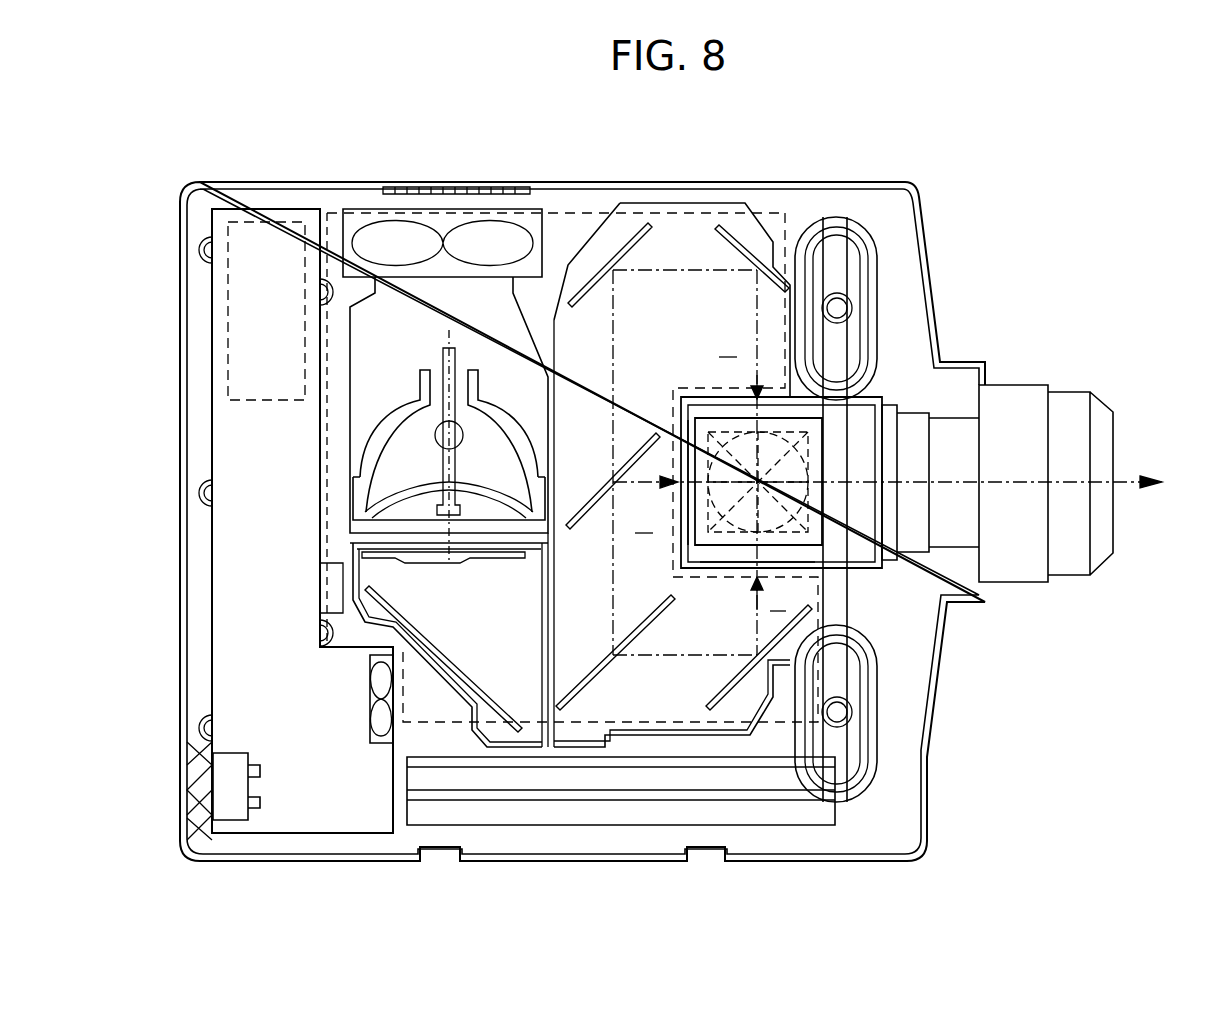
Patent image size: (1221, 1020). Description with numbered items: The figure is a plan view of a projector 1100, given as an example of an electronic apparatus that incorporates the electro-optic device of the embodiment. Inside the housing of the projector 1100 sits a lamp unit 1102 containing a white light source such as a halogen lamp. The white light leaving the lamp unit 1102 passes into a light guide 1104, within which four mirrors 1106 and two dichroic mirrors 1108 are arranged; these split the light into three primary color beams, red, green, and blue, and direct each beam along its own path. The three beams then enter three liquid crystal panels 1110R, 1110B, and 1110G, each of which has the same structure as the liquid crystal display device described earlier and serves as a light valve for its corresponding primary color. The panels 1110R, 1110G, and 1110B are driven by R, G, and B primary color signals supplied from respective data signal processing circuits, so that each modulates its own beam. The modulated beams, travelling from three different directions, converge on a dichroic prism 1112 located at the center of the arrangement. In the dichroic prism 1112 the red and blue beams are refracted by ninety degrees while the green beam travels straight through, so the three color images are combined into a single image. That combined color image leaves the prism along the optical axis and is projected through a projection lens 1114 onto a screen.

The projector 1100 is at (935, 189).
The lamp unit 1102 is at (495, 330).
The light guide 1104 is at (620, 207).
The mirror 1106 is at (730, 245).
The dichroic mirror 1108 is at (606, 498).
The liquid crystal panel 1110R is at (724, 397).
The liquid crystal panel 1110G is at (687, 450).
The liquid crystal panel 1110B is at (713, 570).
The dichroic prism 1112 is at (823, 550).
The projection lens 1114 is at (1085, 400).